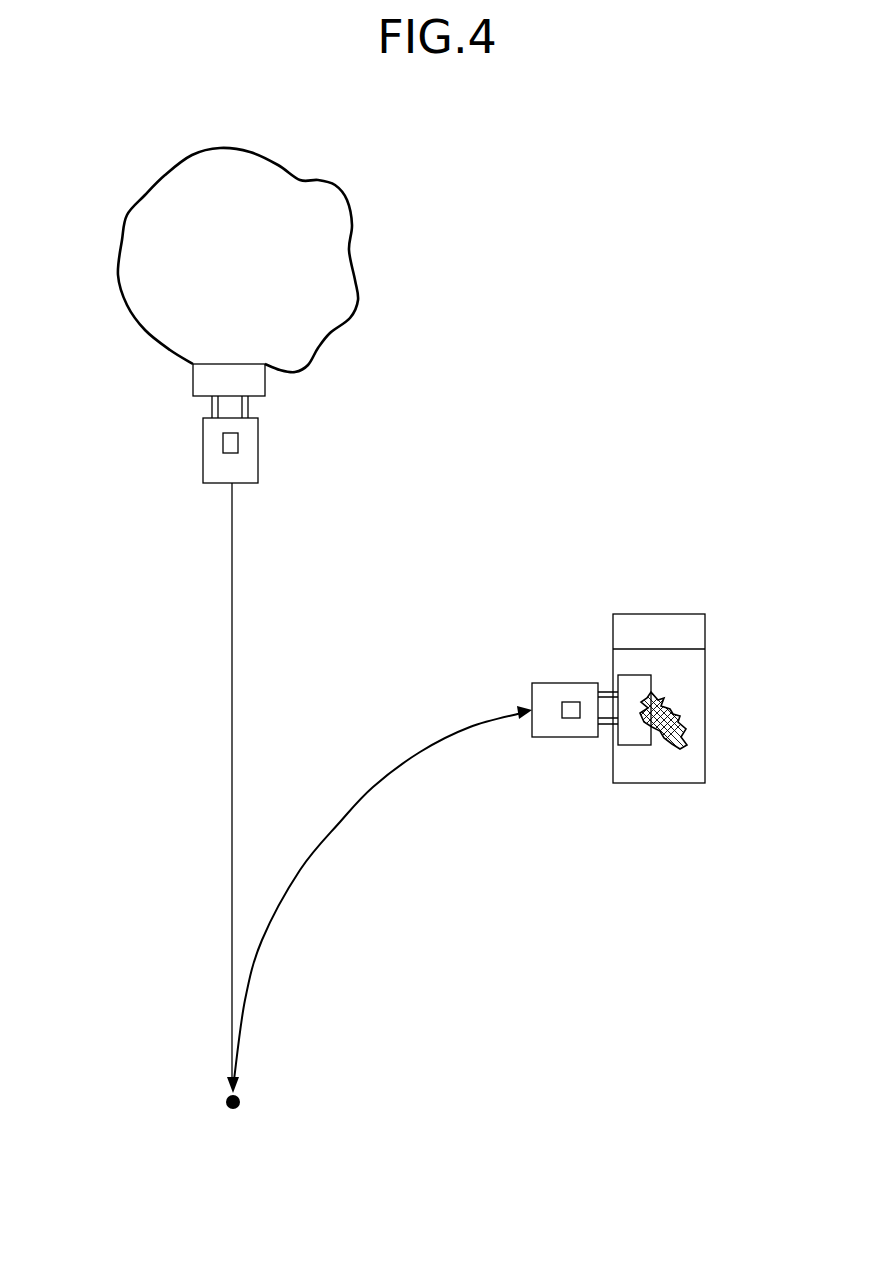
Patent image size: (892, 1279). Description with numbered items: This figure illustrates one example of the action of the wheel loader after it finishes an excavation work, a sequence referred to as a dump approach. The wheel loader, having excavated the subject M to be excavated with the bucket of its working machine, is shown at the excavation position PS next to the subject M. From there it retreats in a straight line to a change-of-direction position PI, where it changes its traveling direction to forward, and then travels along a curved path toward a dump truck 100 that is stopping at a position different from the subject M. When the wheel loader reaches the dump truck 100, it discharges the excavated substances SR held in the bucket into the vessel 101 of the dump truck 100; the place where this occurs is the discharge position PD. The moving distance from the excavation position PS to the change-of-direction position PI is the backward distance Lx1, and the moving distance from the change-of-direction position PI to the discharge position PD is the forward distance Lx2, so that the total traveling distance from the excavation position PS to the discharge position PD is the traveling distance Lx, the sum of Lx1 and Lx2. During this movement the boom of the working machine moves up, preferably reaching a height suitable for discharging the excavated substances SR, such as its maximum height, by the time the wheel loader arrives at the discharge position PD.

The subject to be excavated M is at (303, 186).
The excavation position PS is at (191, 450).
The traveling distance Lx is at (379, 788).
The backward distance Lx1 is at (232, 705).
The forward distance Lx2 is at (302, 700).
The change-of-direction position PI is at (232, 1120).
The discharge position PD is at (555, 722).
The dump truck 100 is at (692, 631).
The vessel 101 is at (693, 665).
The excavated substances SR is at (685, 737).